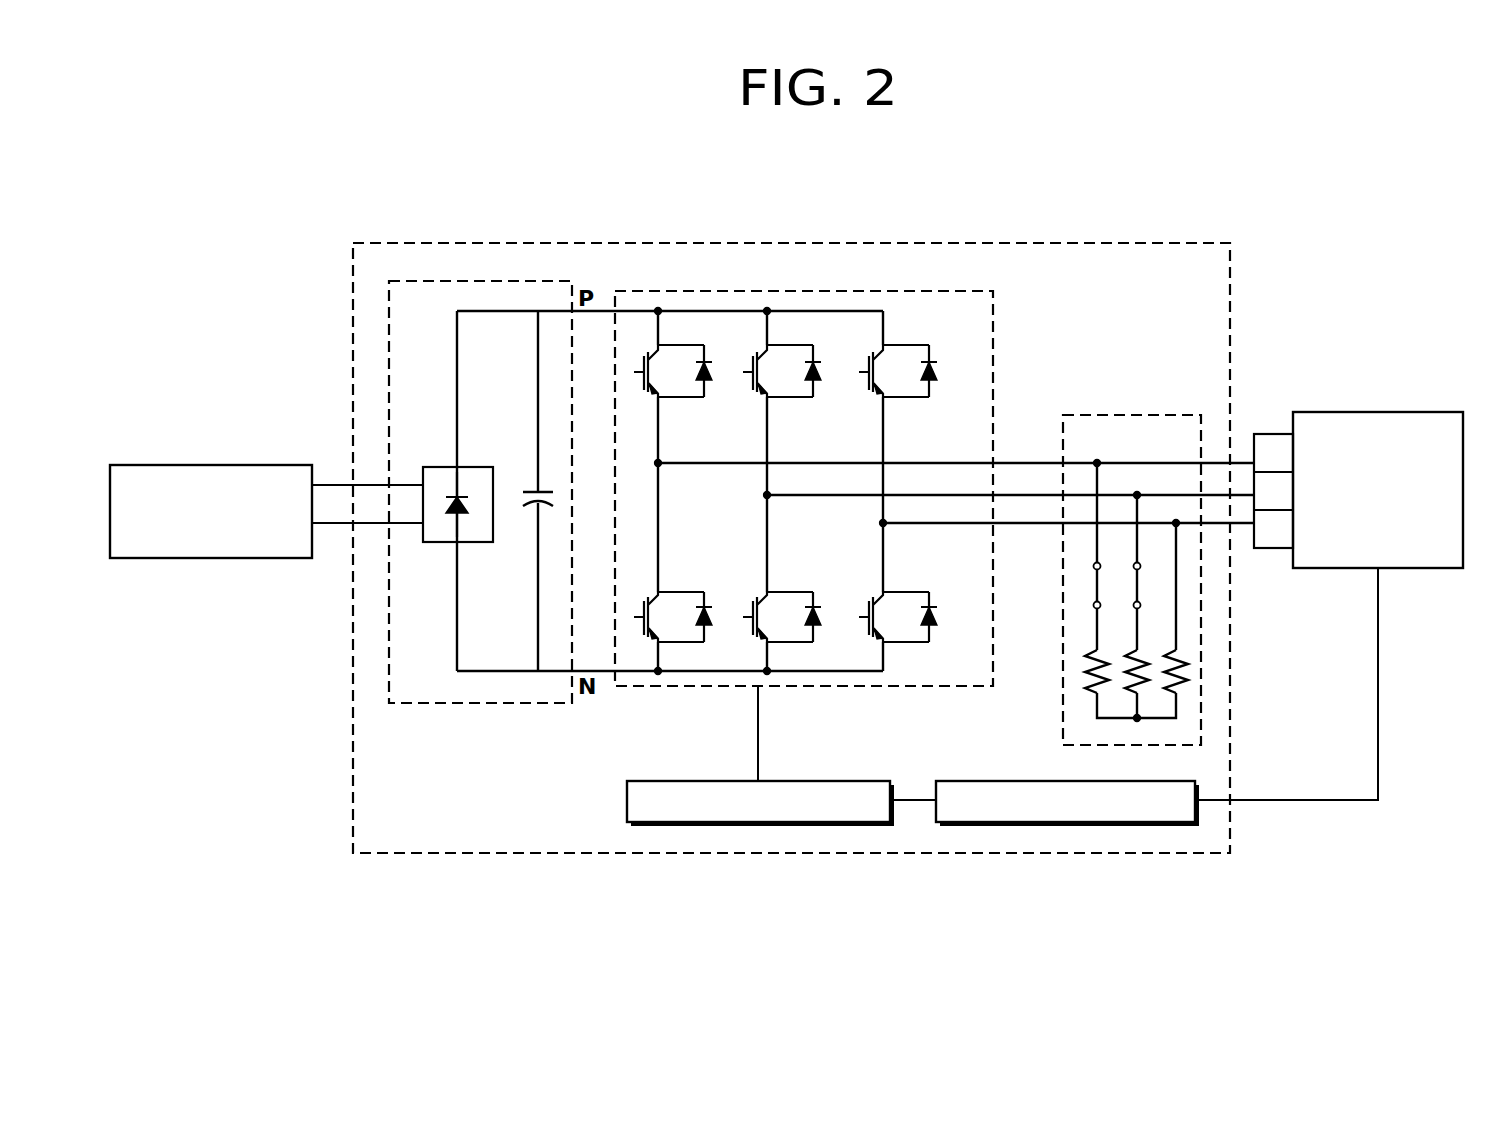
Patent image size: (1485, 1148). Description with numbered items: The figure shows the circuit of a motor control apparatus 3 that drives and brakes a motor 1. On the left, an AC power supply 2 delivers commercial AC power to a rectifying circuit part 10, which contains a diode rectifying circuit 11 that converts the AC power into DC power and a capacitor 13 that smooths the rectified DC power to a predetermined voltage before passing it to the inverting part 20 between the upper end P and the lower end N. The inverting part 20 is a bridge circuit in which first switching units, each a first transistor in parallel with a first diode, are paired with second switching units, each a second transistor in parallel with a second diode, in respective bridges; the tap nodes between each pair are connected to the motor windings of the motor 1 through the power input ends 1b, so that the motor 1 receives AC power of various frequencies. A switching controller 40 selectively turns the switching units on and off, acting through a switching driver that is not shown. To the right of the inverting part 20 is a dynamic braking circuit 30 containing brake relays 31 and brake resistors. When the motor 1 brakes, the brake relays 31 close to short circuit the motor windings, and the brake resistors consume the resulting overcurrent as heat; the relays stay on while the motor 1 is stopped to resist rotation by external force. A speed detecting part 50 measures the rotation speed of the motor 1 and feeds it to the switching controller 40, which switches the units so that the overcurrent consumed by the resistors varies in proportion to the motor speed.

The motor 1 is at (1375, 412).
The power input ends 1b is at (1268, 434).
The AC power supply 2 is at (216, 465).
The motor control apparatus 3 is at (936, 243).
The rectifying circuit part 10 is at (503, 281).
The diode rectifying circuit 11 is at (486, 467).
The capacitor 13 is at (540, 504).
The inverting part 20 is at (812, 291).
The dynamic braking circuit 30 is at (1129, 415).
The brake relays 31 is at (1134, 600).
The switching controller 40 is at (766, 822).
The speed detecting part 50 is at (1098, 822).